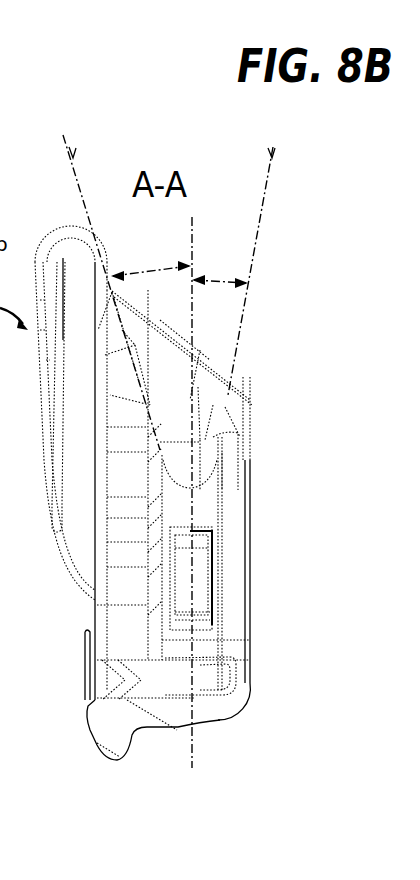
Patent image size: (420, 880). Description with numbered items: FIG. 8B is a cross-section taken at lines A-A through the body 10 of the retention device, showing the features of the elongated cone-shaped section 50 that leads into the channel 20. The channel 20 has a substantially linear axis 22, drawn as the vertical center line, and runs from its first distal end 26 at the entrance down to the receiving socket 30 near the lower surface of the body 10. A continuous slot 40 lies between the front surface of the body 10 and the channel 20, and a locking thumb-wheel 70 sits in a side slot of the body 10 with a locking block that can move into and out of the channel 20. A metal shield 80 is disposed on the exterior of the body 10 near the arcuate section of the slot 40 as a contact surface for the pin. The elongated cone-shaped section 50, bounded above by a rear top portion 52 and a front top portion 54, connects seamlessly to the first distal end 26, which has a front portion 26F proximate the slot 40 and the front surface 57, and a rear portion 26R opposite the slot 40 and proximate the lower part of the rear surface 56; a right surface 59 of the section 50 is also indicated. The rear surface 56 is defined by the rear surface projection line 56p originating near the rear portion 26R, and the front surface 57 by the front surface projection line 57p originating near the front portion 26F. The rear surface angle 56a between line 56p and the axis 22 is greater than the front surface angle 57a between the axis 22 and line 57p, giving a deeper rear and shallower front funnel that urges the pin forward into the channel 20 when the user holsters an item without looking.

The body 10 is at (88, 733).
The channel 20 is at (200, 512).
The substantially linear axis 22 is at (193, 219).
The first distal end 26 is at (192, 453).
The rear portion of first distal end 26R is at (152, 427).
The front portion of first distal end 26F is at (222, 453).
The receiving socket 30 is at (193, 670).
The continuous slot 40 is at (235, 522).
The elongated cone-shaped section 50 is at (168, 413).
The rear top portion 52 is at (112, 290).
The front top portion 54 is at (225, 407).
The rear surface 56 is at (143, 388).
The rear surface angle 56a is at (168, 270).
The rear surface projection line 56p is at (88, 136).
The front surface 57 is at (223, 410).
The front surface angle 57a is at (207, 280).
The front surface projection line 57p is at (258, 141).
The right surface 59 is at (198, 387).
The locking thumb-wheel 70 is at (203, 567).
The metal shield 80 is at (245, 683).